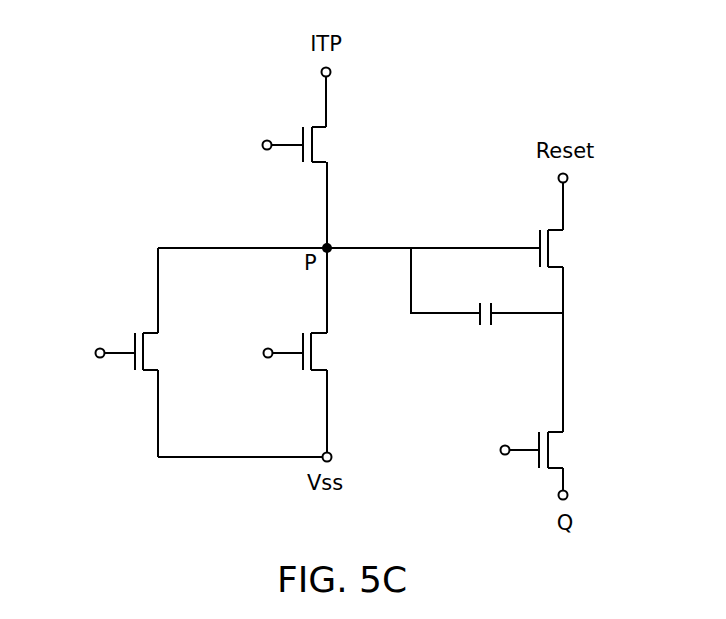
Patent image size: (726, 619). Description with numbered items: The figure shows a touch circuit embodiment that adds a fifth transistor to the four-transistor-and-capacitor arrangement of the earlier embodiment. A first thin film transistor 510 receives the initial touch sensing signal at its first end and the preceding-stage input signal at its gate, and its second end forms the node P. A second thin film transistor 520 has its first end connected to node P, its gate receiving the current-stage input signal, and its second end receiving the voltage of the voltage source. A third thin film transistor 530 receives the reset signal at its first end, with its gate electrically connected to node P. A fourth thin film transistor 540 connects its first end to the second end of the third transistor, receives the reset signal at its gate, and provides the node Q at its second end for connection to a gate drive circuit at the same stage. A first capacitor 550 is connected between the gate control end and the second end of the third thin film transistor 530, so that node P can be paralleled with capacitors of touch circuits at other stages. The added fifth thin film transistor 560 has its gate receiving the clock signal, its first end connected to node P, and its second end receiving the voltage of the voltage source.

The first thin film transistor 510 is at (279, 144).
The second thin film transistor 520 is at (309, 342).
The third thin film transistor 530 is at (574, 248).
The fourth thin film transistor 540 is at (520, 450).
The first capacitor 550 is at (487, 303).
The fifth thin film transistor 560 is at (125, 351).